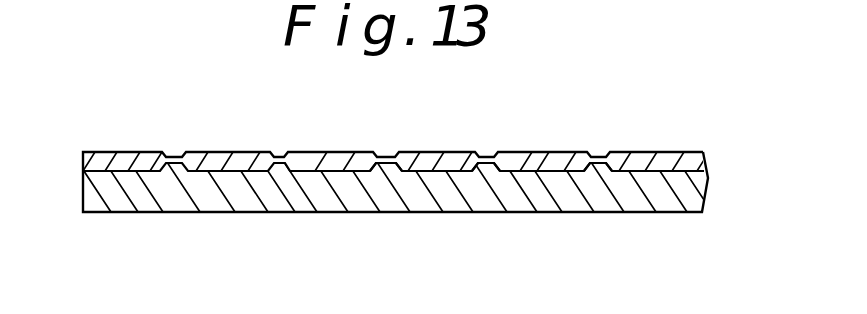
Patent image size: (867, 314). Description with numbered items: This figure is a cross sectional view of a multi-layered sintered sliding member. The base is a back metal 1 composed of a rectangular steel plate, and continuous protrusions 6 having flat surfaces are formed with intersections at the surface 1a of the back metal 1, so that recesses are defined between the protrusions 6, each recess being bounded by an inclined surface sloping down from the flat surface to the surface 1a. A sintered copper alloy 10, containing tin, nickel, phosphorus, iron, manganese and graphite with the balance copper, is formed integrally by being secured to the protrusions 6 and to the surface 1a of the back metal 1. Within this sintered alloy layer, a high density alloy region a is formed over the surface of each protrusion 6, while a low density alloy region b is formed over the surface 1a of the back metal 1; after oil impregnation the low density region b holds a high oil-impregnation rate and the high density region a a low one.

The back metal 1 is at (508, 232).
The surface of the back metal 1a is at (686, 153).
The sintered copper alloy 10 is at (231, 150).
The protrusions 6 is at (599, 162).
The high density alloy region a is at (493, 151).
The low density alloy region b is at (418, 151).